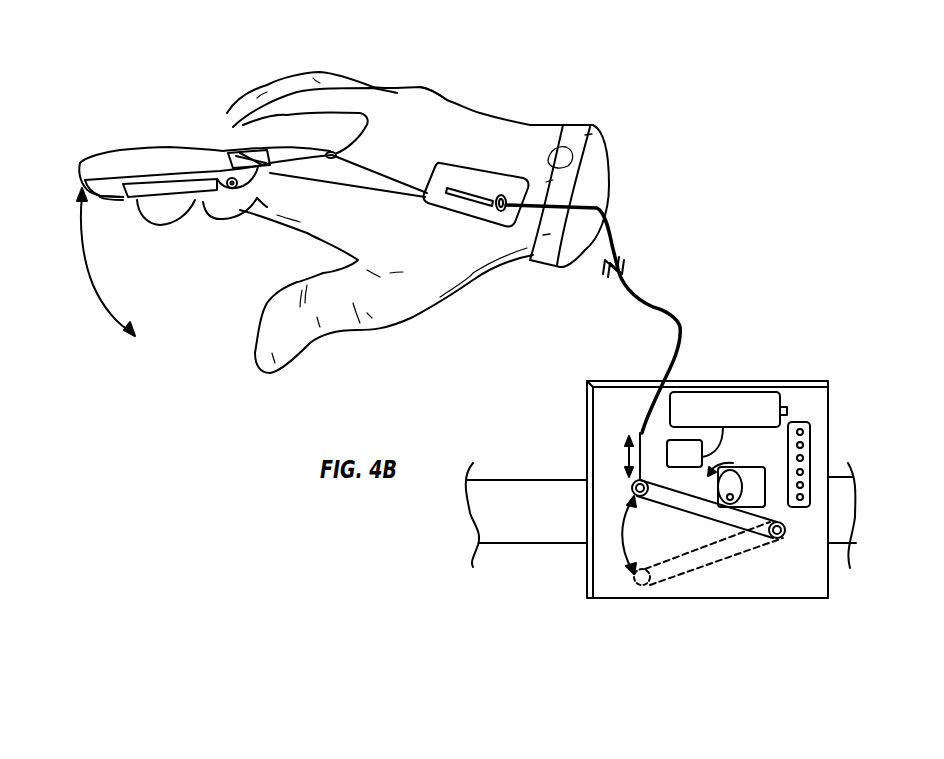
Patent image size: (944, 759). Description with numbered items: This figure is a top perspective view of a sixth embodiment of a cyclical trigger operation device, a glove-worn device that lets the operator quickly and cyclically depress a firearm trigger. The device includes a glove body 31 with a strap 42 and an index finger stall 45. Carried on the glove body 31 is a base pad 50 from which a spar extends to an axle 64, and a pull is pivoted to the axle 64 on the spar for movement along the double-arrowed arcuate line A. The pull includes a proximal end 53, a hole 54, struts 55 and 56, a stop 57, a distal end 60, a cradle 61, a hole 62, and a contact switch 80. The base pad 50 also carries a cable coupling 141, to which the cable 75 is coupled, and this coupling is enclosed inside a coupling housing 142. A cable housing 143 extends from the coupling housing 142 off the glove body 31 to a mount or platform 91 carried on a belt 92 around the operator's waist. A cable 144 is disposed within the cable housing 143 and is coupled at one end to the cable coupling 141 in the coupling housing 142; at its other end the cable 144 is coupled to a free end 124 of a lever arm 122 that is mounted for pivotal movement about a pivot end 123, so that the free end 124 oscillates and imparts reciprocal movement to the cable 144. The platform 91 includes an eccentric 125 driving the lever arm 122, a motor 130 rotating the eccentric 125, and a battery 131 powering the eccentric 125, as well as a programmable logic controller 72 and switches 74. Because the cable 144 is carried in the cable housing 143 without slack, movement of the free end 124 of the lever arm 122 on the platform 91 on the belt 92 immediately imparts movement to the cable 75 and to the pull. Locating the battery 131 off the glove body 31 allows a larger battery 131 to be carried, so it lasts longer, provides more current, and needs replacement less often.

The glove body 31 is at (447, 98).
The strap 42 is at (553, 270).
The index finger stall 45 is at (147, 152).
The base pad 50 is at (447, 165).
The proximal end 53 is at (305, 130).
The hole 54 is at (345, 148).
The strut 55 is at (240, 162).
The strut 56 is at (200, 188).
The stop 57 is at (253, 175).
The distal end 60 is at (78, 176).
The cradle 61 is at (107, 203).
The hole 62 is at (113, 198).
The axle 64 is at (237, 153).
The programmable logic controller 72 is at (663, 437).
The switches 74 is at (810, 432).
The cable 75 is at (380, 175).
The contact switch 80 is at (120, 202).
The platform 91 is at (800, 381).
The belt 92 is at (503, 480).
The lever arm 122 is at (725, 560).
The pivot end 123 is at (780, 536).
The free end 124 is at (643, 587).
The eccentric 125 is at (720, 480).
The motor 130 is at (752, 440).
The battery 131 is at (720, 392).
The cable coupling 141 is at (473, 192).
The coupling housing 142 is at (503, 196).
The cable housing 143 is at (603, 212).
The cable 144 is at (627, 460).
The double-arrowed arcuate line A is at (112, 312).